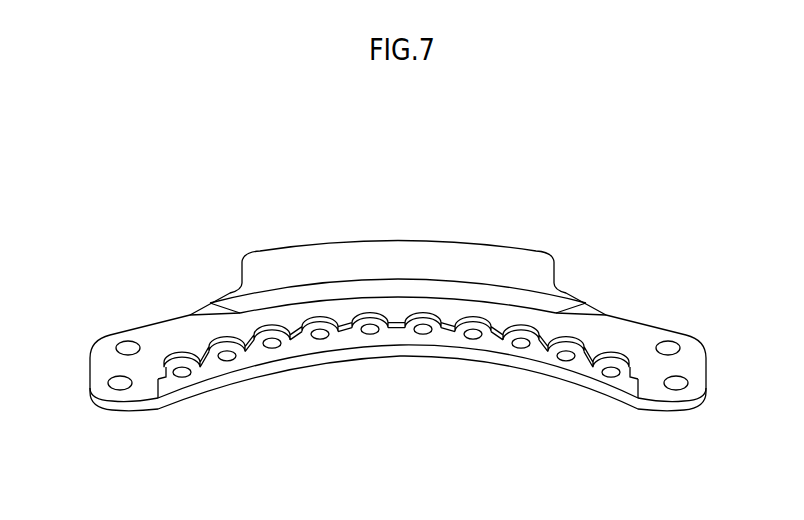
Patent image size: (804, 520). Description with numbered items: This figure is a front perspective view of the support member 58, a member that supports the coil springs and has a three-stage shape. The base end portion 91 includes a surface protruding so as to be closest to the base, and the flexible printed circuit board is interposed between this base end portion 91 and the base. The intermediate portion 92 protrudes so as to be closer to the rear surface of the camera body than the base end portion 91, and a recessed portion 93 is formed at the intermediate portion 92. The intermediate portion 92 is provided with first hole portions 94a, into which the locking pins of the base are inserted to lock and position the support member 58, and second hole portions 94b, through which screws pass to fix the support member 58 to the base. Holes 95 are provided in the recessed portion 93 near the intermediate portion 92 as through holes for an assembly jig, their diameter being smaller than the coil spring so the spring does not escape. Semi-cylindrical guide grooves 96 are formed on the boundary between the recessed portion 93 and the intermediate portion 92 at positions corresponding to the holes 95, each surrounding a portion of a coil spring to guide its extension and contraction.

The support member 58 is at (211, 150).
The base end portion 91 is at (268, 263).
The intermediate portion 92 is at (178, 331).
The recessed portion 93 is at (343, 343).
The first hole portions 94a is at (118, 382).
The second hole portions 94b is at (128, 347).
The holes 95 is at (228, 354).
The guide grooves 96 is at (322, 330).